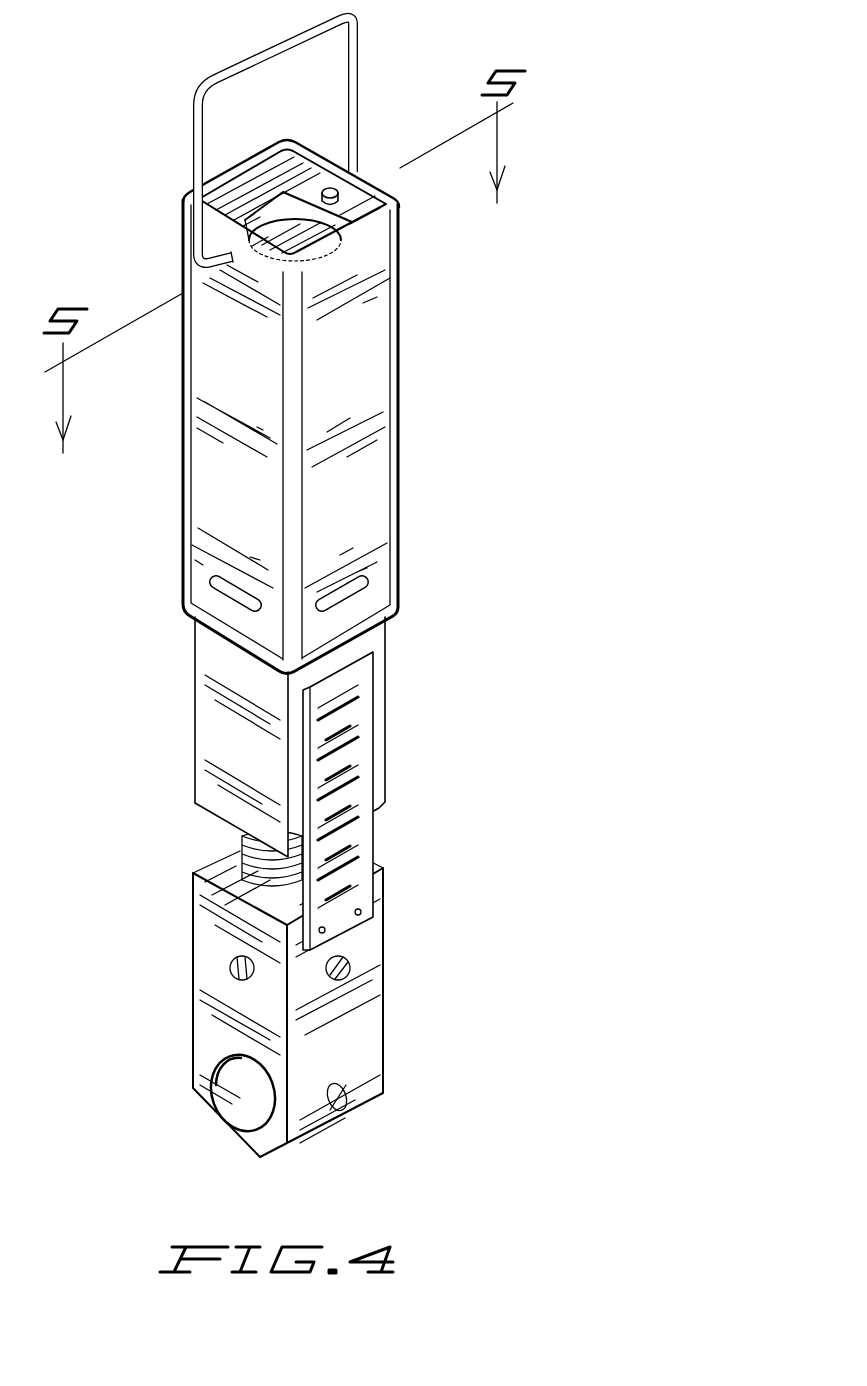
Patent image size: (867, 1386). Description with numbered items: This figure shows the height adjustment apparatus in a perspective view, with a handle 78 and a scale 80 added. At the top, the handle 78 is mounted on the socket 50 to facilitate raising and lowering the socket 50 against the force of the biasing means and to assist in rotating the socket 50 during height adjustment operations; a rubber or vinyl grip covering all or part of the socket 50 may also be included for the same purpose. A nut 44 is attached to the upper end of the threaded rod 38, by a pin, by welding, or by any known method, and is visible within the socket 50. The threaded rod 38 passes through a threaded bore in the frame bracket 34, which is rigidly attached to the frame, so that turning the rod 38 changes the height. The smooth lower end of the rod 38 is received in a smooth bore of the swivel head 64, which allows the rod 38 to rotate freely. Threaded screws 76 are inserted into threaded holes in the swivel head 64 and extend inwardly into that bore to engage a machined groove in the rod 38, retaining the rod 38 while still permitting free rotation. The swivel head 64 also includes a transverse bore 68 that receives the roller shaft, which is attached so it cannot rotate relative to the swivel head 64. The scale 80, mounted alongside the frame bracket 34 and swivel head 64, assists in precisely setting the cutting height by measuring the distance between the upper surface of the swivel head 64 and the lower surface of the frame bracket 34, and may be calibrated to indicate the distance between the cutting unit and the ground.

The handle 78 is at (195, 96).
The nut 44 is at (296, 208).
The socket 50 is at (398, 427).
The frame bracket 34 is at (385, 686).
The scale 80 is at (362, 834).
The threaded rod 38 is at (242, 868).
The threaded screws 76 is at (233, 968).
The swivel head 64 is at (385, 1007).
The transverse bore 68 is at (247, 1100).